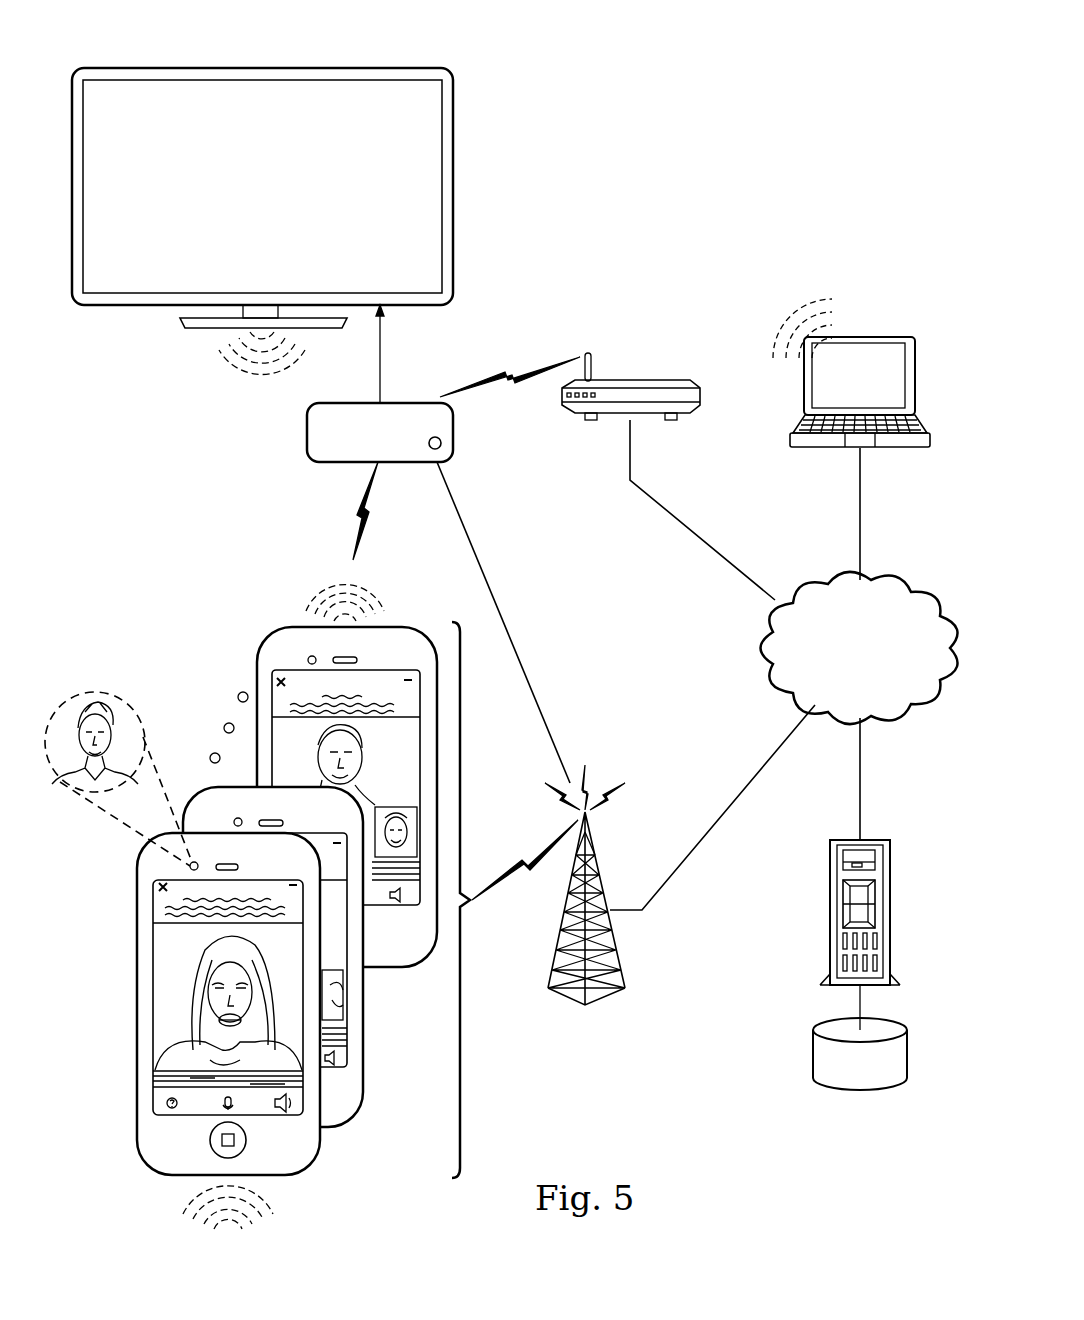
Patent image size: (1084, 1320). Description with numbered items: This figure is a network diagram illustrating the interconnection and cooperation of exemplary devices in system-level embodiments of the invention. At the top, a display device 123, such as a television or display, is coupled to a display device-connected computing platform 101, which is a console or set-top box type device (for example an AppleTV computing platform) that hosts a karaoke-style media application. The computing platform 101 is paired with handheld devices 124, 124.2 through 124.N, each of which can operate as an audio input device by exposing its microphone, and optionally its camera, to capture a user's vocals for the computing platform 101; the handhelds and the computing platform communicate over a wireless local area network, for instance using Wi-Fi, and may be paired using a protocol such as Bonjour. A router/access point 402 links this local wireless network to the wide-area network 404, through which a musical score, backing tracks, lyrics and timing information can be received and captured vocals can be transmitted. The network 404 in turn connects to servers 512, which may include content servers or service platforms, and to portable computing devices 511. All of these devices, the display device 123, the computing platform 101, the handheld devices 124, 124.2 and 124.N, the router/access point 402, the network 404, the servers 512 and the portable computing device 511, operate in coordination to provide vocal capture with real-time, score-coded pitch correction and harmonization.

The display device 123 is at (184, 62).
The display device-connected computing platform 101 is at (307, 432).
The router/access point 402 is at (641, 380).
The portable computing device 511 is at (870, 337).
The network 404 is at (885, 722).
The server 512 is at (890, 912).
The handheld device 124 is at (137, 1000).
The handheld device 124.2 is at (352, 1118).
The handheld device 124.N is at (257, 672).